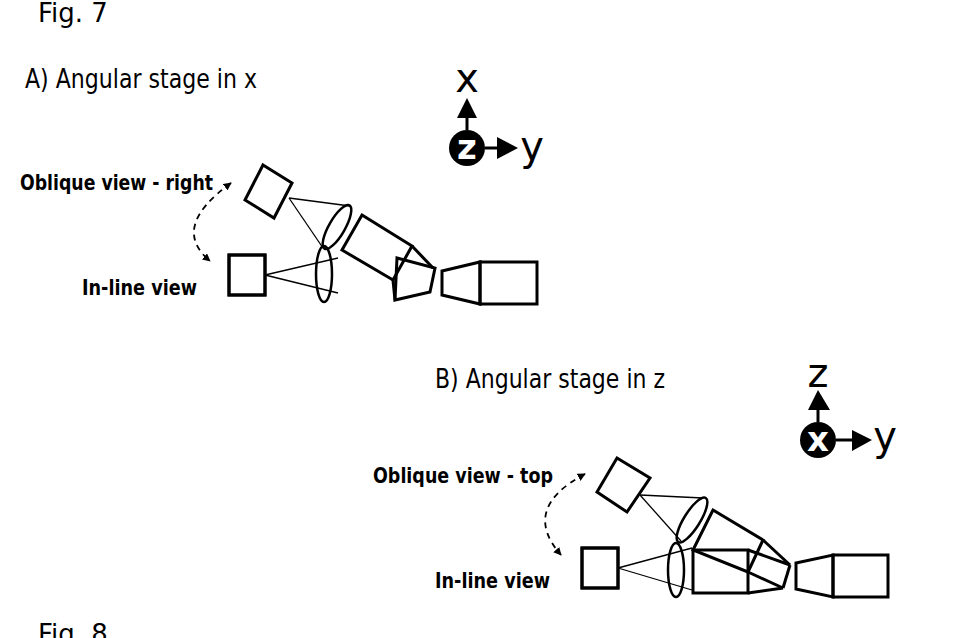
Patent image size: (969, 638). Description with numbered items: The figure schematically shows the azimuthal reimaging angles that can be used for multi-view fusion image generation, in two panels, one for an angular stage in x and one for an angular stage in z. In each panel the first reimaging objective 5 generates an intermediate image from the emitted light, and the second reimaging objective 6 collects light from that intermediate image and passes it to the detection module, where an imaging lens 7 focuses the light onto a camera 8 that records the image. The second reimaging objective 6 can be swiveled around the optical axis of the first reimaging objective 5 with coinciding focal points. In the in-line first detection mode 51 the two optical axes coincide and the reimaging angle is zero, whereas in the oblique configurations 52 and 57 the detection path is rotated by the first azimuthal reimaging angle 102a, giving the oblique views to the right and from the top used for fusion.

The second detection mode 52 is at (250, 184).
The azimuthal configuration 57 is at (605, 476).
The first detection mode 51 is at (224, 275).
The first azimuthal reimaging angle 102a is at (195, 222).
The camera 8 is at (247, 297).
The imaging lens 7 is at (323, 302).
The second reimaging objective 6 is at (372, 268).
The first reimaging objective 5 is at (497, 305).